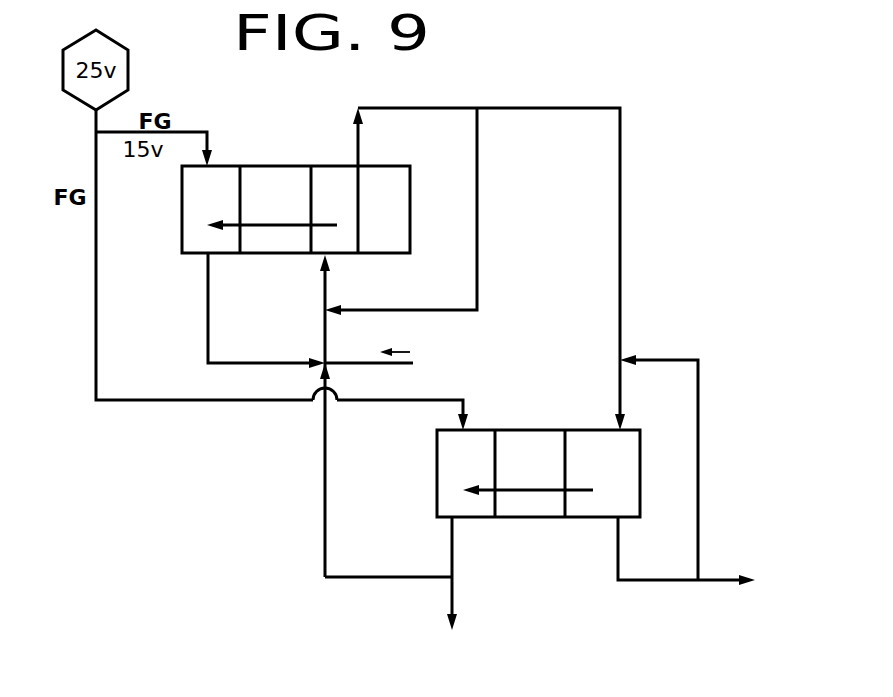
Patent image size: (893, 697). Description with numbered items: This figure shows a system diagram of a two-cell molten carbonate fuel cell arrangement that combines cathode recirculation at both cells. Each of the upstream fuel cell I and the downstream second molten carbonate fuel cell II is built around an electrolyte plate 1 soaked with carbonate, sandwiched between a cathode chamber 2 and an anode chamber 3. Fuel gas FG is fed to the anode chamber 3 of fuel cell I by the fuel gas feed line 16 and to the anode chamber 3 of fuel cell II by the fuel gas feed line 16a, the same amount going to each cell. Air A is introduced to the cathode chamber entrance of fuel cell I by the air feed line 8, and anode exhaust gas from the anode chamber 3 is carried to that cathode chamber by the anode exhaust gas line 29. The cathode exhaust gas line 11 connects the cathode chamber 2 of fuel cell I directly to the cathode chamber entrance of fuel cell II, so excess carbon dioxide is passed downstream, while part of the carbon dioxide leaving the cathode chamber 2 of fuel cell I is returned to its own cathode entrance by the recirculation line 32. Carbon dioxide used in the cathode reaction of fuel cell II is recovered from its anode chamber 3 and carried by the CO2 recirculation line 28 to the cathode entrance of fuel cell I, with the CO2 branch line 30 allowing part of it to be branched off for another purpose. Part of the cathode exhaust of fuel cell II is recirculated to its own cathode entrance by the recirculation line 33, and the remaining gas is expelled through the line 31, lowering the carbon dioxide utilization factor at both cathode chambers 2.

The fuel gas feed line 16 is at (200, 131).
The fuel gas feed line 16a is at (95, 337).
The cathode exhaust gas line 11 is at (522, 72).
The recirculation line 32 is at (475, 282).
The anode exhaust gas line 29 is at (208, 310).
The air feed line 8 is at (345, 363).
The CO2 recirculation line 28 is at (322, 520).
The CO2 branch line 30 is at (455, 595).
The line 31 is at (645, 580).
The recirculation line 33 is at (700, 462).
The electrolyte plate 1 is at (291, 241).
The cathode chamber 2 is at (403, 235).
The anode chamber 3 is at (190, 228).
The fuel cell I is at (289, 158).
The second molten carbonate fuel cell II is at (541, 420).